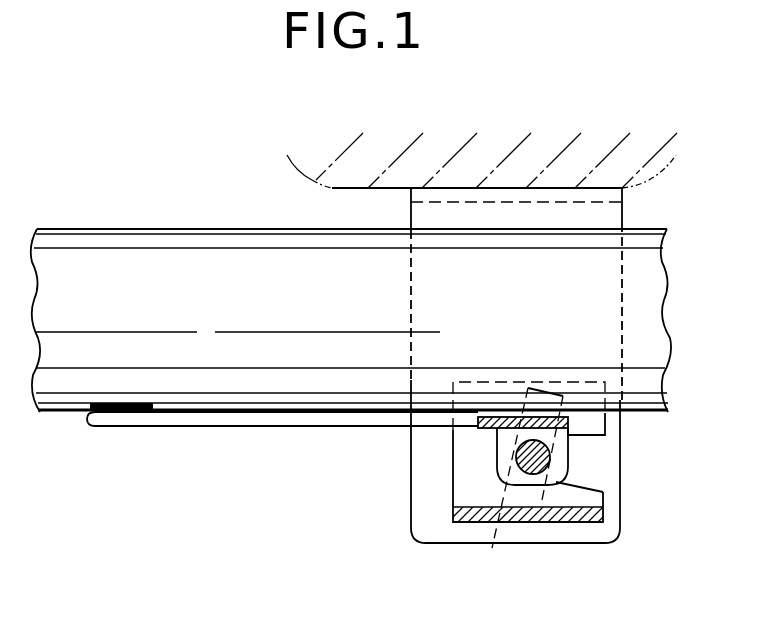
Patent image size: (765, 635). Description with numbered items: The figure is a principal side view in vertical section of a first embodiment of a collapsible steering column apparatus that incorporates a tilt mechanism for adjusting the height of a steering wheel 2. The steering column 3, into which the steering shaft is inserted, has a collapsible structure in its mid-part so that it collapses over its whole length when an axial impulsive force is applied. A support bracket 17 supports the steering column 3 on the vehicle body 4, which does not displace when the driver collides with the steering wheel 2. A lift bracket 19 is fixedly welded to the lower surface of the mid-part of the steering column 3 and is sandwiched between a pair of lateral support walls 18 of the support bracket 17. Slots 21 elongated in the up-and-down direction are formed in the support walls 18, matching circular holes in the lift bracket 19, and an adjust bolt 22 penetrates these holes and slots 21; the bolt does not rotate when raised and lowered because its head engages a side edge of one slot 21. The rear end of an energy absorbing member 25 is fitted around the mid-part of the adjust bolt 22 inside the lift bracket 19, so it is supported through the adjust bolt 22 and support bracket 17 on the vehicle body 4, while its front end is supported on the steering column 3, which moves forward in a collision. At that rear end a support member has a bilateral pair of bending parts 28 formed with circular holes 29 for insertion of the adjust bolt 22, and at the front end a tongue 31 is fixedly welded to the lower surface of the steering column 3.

The steering wheel 2 is at (495, 80).
The steering column 3 is at (193, 387).
The vehicle body 4 is at (660, 172).
The support bracket 17 is at (610, 482).
The support wall 18 is at (623, 424).
The lift bracket 19 is at (612, 533).
The slot 21 is at (517, 484).
The adjust bolt 22 is at (518, 462).
The energy absorbing member 25 is at (311, 468).
The bending part 28 is at (562, 448).
The circular hole 29 is at (556, 462).
The tongue 31 is at (100, 417).